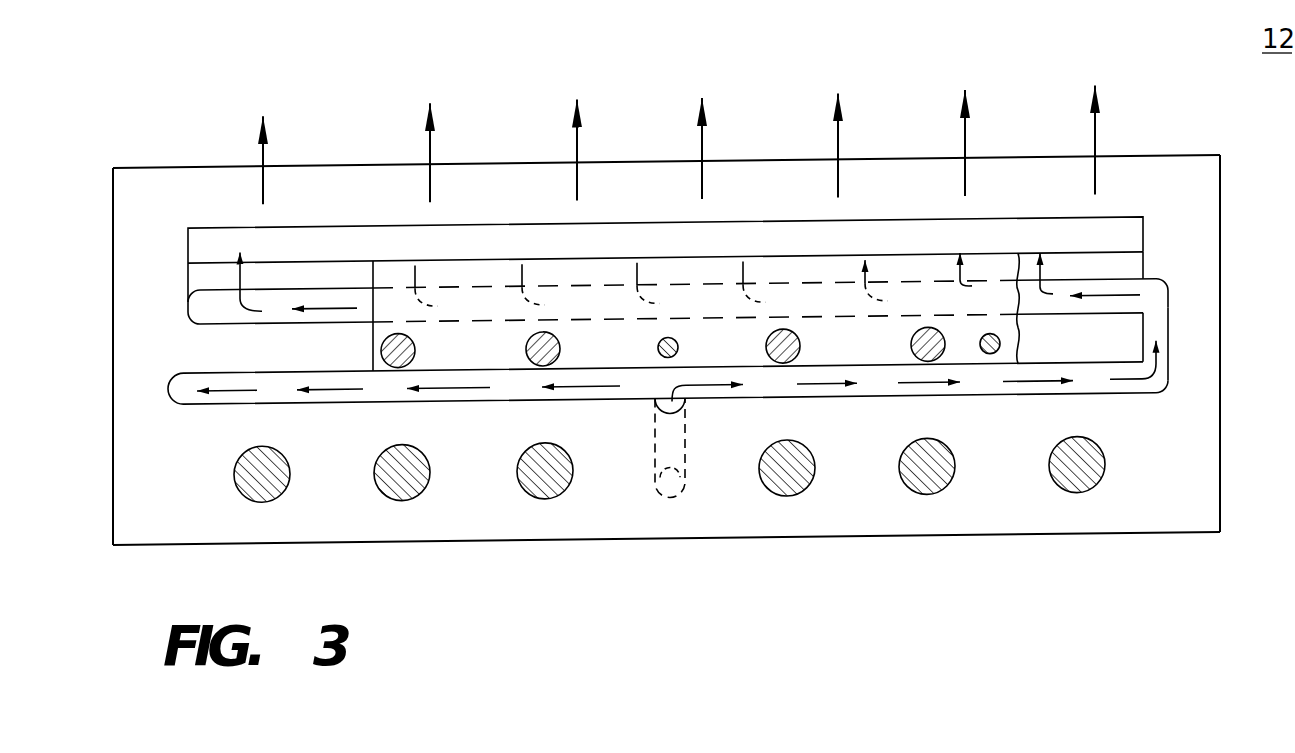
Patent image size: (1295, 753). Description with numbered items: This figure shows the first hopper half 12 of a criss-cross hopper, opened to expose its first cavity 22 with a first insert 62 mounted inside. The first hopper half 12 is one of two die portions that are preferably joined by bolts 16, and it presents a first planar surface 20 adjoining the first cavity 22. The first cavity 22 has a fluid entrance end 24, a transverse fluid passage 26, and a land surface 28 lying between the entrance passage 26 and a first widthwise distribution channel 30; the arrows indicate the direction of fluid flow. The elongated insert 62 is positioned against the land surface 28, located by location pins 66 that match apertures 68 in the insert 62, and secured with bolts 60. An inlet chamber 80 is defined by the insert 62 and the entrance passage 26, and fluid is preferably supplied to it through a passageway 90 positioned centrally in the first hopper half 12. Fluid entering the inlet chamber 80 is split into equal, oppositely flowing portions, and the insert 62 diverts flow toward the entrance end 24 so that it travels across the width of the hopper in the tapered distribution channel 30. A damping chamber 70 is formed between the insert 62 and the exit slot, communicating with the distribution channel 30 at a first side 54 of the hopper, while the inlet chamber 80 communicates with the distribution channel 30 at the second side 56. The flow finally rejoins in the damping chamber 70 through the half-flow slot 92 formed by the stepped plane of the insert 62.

The first hopper half 12 is at (1245, 478).
The bolts 16 is at (421, 483).
The first planar surface 20 is at (1221, 191).
The first cavity 22 is at (1145, 285).
The fluid entrance end 24 is at (1143, 405).
The transverse fluid passage 26 is at (779, 390).
The land surface 28 is at (1123, 355).
The first widthwise distribution channel 30 is at (1072, 284).
The first side 54 is at (113, 266).
The second side 56 is at (1245, 307).
The bolts 60 is at (527, 350).
The insert 62 is at (708, 315).
The location pins 66 is at (657, 354).
The apertures 68 is at (677, 352).
The damping chamber 70 is at (503, 252).
The inlet chamber 80 is at (920, 406).
The passageway 90 is at (668, 505).
The half-flow slot 92 is at (203, 282).